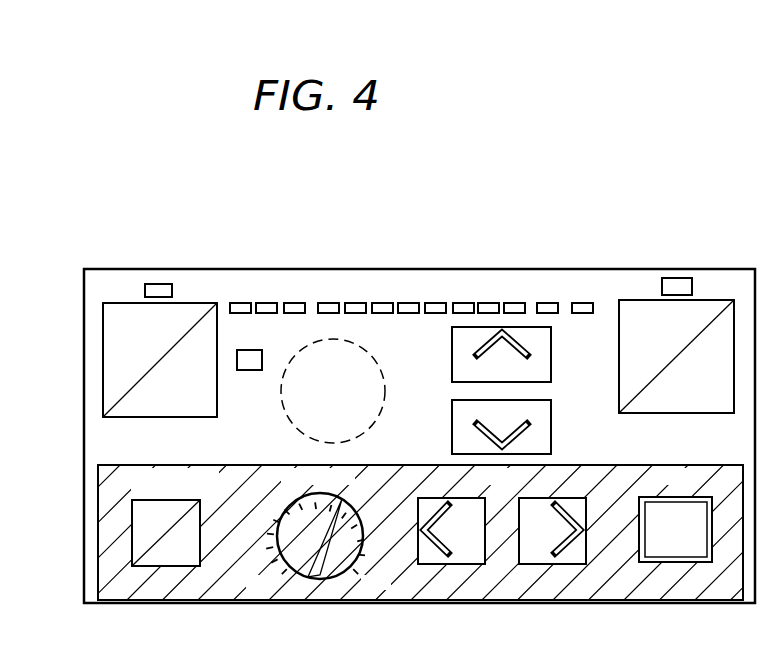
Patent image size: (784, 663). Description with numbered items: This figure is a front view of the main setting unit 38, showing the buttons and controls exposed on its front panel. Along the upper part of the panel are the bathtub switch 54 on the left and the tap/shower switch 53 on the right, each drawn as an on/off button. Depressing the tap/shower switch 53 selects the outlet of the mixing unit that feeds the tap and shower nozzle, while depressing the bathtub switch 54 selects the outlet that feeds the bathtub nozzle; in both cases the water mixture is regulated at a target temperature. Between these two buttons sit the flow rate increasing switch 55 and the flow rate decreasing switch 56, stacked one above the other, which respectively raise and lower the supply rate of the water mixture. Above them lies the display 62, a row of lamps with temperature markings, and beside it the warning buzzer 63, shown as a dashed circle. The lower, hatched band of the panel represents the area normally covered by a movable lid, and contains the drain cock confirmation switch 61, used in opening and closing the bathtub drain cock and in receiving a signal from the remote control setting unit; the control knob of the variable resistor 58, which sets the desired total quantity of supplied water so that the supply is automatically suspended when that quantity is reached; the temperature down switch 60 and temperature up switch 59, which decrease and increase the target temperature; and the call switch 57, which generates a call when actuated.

The main setting unit 38 is at (473, 190).
The tap/shower switch 53 is at (735, 338).
The bathtub switch 54 is at (102, 352).
The flow rate increasing switch 55 is at (456, 327).
The flow rate decreasing switch 56 is at (553, 425).
The call switch 57 is at (683, 547).
The variable resistor 58 is at (328, 568).
The temperature up switch 59 is at (567, 564).
The temperature down switch 60 is at (463, 564).
The drain cock confirmation switch 61 is at (160, 566).
The display 62 is at (347, 270).
The warning buzzer 63 is at (323, 340).